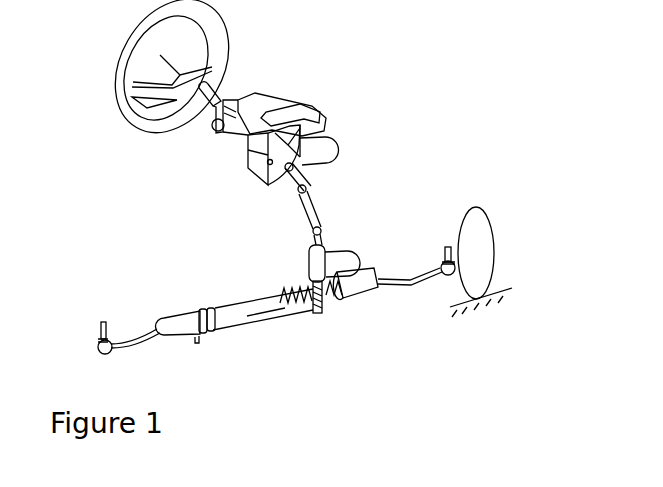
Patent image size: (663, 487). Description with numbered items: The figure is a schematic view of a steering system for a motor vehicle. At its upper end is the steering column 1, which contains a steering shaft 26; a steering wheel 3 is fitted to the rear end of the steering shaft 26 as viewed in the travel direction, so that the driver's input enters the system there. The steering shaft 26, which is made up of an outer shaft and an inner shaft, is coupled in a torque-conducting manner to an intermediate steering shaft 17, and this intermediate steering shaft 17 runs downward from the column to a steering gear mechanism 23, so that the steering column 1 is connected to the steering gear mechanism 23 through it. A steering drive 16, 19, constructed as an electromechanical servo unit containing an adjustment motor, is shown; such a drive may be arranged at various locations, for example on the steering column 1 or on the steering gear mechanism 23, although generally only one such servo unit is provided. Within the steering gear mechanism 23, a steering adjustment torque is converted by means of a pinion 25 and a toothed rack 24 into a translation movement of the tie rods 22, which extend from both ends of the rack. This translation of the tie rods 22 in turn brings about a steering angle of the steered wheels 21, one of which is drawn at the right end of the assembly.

The steering column 1 is at (309, 86).
The steering wheel 3 is at (217, 28).
The steering drive 16 is at (328, 152).
The intermediate steering shaft 17 is at (305, 213).
The steering drive 19 is at (337, 258).
The steered wheels 21 is at (483, 244).
The tie rods 22 is at (142, 338).
The steering gear mechanism 23 is at (295, 278).
The toothed rack 24 is at (292, 306).
The pinion 25 is at (322, 312).
The steering shaft 26 is at (217, 95).